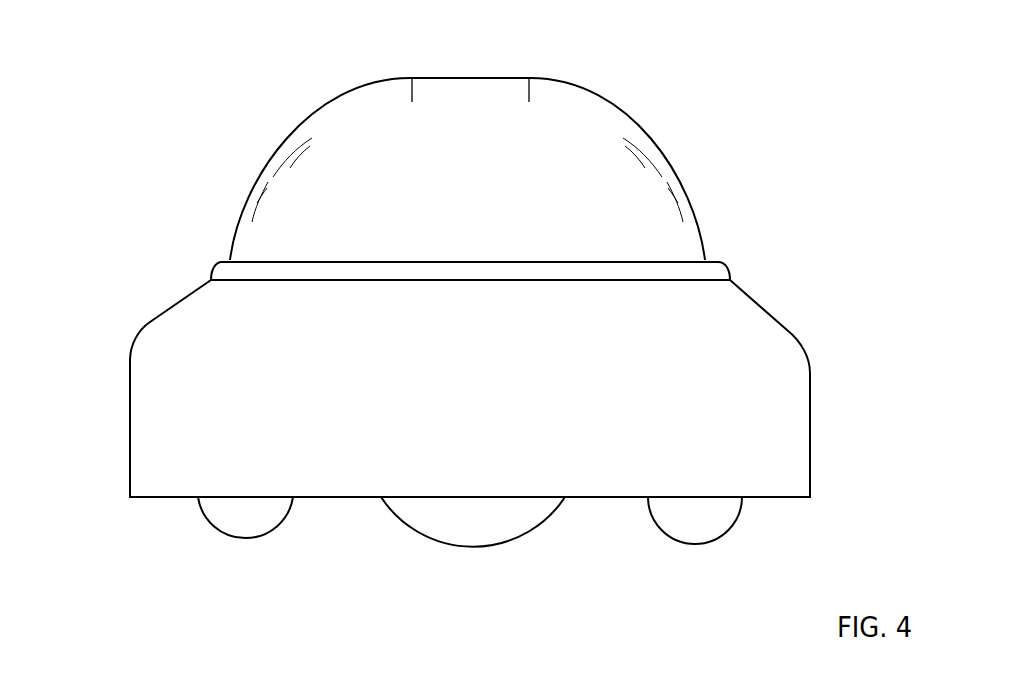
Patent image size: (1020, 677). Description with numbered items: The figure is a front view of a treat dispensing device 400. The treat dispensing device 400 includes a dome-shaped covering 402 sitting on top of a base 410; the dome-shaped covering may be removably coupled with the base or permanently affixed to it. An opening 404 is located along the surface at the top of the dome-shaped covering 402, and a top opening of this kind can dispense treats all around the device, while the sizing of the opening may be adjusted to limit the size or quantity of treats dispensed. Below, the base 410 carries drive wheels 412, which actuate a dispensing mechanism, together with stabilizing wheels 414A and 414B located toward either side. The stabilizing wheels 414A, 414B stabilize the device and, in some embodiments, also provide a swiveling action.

The treat dispensing device 400 is at (745, 94).
The dome-shaped covering 402 is at (83, 66).
The opening 404 is at (444, 78).
The base 410 is at (83, 269).
The drive wheels 412 is at (535, 530).
The stabilizing wheel 414A is at (273, 537).
The stabilizing wheel 414B is at (735, 525).